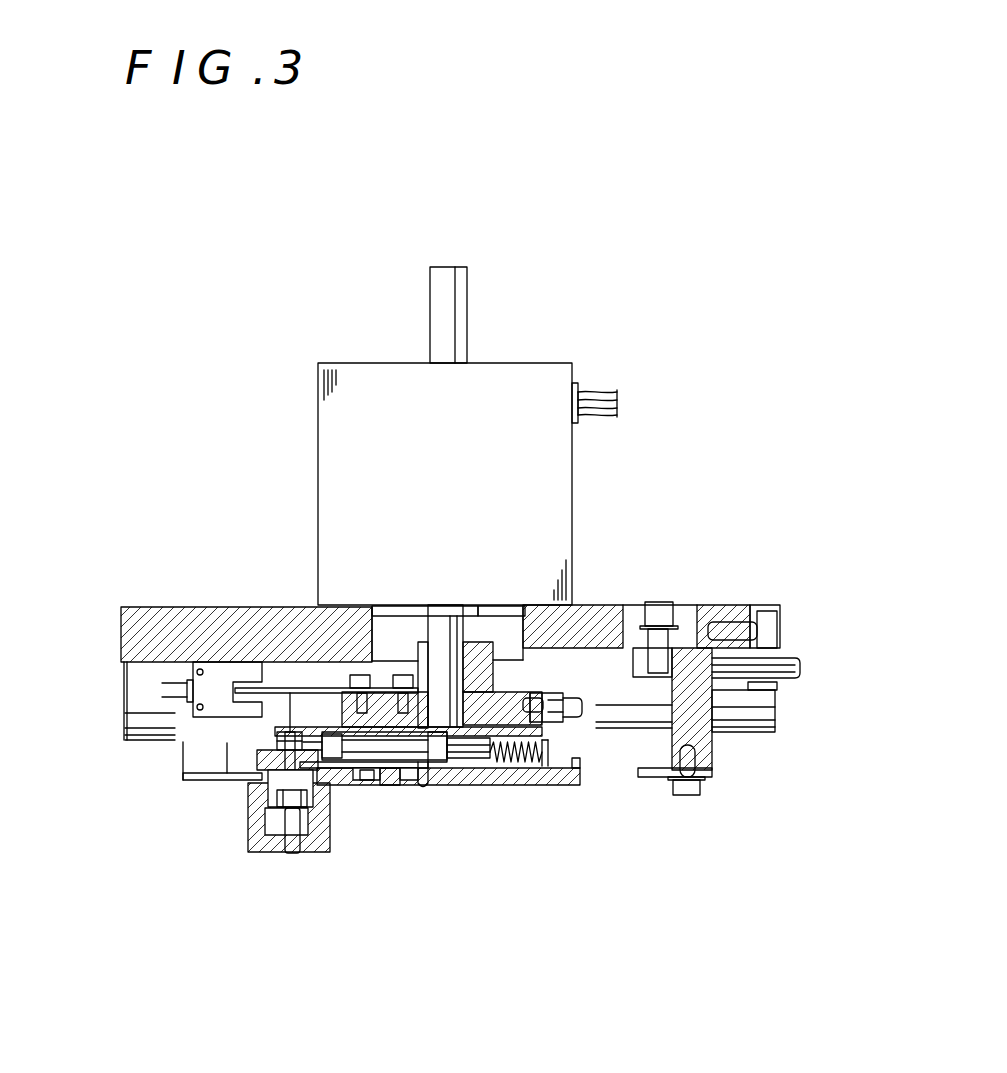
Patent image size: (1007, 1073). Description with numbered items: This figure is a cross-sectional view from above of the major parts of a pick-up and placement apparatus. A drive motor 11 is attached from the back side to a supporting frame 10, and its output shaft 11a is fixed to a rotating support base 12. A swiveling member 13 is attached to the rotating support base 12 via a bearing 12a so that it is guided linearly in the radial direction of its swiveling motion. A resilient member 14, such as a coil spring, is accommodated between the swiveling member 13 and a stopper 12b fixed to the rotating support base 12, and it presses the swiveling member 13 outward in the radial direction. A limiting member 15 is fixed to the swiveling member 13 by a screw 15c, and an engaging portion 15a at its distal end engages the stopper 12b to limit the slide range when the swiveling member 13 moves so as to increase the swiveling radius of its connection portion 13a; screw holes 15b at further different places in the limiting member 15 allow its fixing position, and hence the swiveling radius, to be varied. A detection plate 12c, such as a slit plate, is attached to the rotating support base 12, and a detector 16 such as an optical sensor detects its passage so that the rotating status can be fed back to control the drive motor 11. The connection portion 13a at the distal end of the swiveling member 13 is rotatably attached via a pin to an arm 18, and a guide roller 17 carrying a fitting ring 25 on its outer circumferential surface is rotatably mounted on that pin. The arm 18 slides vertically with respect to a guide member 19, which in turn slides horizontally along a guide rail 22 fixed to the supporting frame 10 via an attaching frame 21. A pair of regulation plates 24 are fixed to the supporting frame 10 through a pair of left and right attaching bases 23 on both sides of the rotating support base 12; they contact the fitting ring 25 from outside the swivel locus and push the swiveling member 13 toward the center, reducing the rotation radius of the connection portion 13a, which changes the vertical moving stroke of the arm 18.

The supporting frame 10 is at (225, 607).
The drive motor 11 is at (318, 455).
The output shaft 11a is at (480, 605).
The rotating support base 12 is at (525, 680).
The bearing 12a is at (372, 785).
The stopper 12b is at (567, 733).
The detection plate 12c is at (282, 690).
The swiveling member 13 is at (412, 787).
The connection portion 13a is at (257, 760).
The resilient member 14 is at (505, 765).
The limiting member 15 is at (530, 783).
The engaging portion 15a is at (585, 770).
The screw holes 15b is at (388, 785).
The screw 15c is at (428, 788).
The detector 16 is at (215, 662).
The guide roller 17 is at (248, 812).
The arm 18 is at (283, 835).
The guide member 19 is at (305, 853).
The attaching frame 21 is at (778, 698).
The guide rail 22 is at (763, 733).
The attaching bases 23 is at (182, 760).
The regulation plates 24 is at (210, 783).
The fitting ring 25 is at (342, 690).